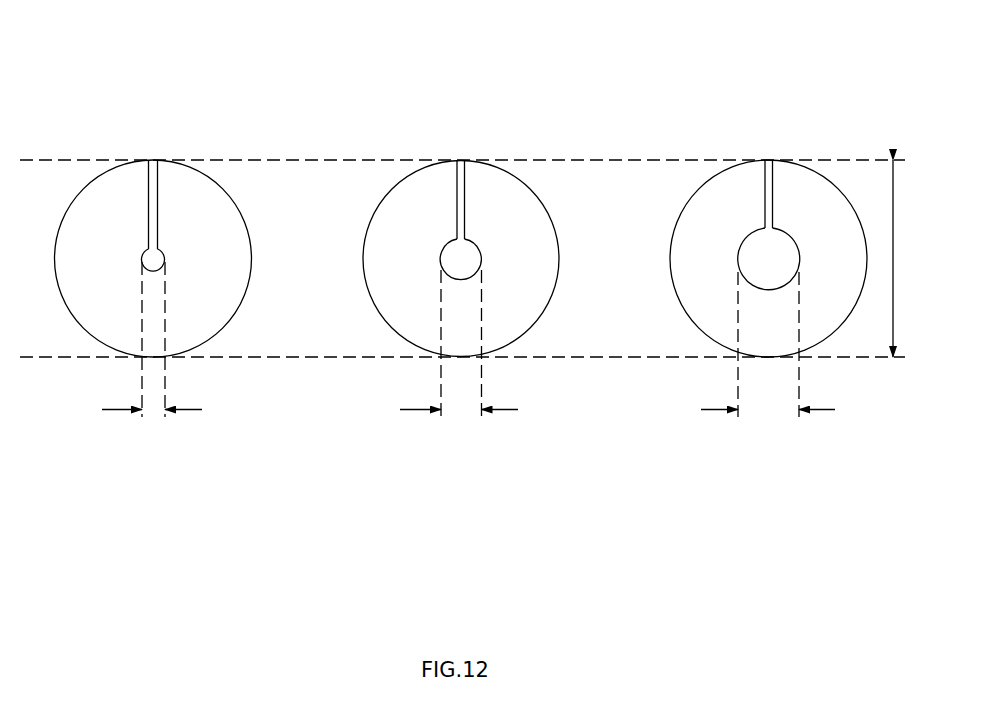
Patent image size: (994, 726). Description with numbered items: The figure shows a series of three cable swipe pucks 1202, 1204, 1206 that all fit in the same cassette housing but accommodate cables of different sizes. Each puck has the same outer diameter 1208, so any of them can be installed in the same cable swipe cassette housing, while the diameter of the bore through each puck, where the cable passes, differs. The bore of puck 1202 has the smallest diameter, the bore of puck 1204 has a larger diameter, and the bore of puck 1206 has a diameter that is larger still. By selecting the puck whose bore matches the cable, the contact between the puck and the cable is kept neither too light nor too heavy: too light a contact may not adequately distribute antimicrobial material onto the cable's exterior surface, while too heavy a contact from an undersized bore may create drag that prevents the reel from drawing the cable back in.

The puck 1202 is at (132, 48).
The puck 1204 is at (440, 48).
The puck 1206 is at (746, 48).
The outer diameter 1208 is at (893, 258).